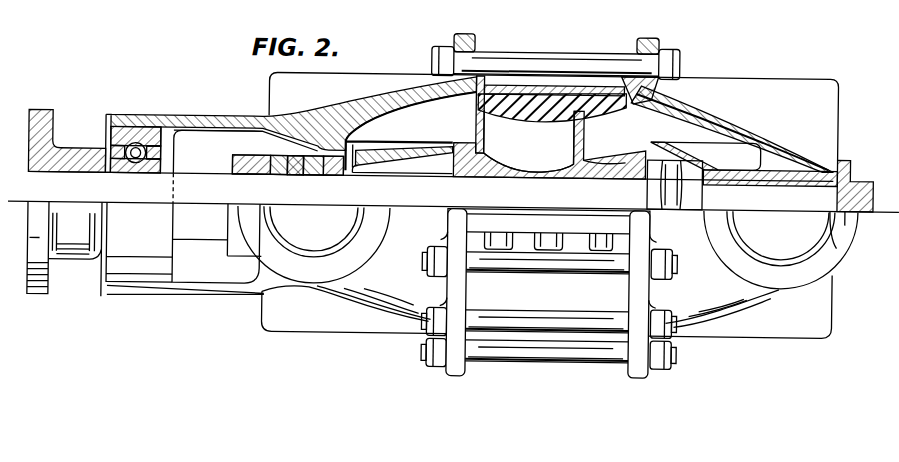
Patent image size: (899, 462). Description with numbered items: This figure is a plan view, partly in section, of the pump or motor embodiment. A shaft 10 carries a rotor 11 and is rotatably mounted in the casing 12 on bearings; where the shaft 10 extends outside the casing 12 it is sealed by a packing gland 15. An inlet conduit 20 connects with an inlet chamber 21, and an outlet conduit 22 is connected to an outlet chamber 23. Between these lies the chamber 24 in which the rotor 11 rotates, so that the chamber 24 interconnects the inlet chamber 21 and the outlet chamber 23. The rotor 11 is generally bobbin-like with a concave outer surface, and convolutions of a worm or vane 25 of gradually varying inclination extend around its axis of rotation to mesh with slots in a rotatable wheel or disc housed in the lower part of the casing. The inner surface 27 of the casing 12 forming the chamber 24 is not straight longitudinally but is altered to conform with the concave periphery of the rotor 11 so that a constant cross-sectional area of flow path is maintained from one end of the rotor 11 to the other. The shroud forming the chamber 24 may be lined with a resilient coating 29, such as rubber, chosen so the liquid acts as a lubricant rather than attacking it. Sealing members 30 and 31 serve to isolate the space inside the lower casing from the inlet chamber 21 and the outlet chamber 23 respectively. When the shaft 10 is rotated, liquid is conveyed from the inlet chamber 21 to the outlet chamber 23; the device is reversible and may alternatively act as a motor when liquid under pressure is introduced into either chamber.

The shaft 10 is at (93, 184).
The rotor 11 is at (632, 142).
The casing 12 is at (387, 95).
The packing gland 15 is at (267, 111).
The inlet conduit 20 is at (286, 240).
The inlet chamber 21 is at (425, 110).
The outlet conduit 22 is at (797, 253).
The outlet chamber 23 is at (697, 118).
The chamber 24 is at (505, 127).
The worm or vane 25 is at (581, 133).
The inner surface of the casing 27 is at (533, 118).
The resilient coating 29 is at (553, 103).
The sealing member 30 is at (363, 143).
The sealing member 31 is at (747, 148).